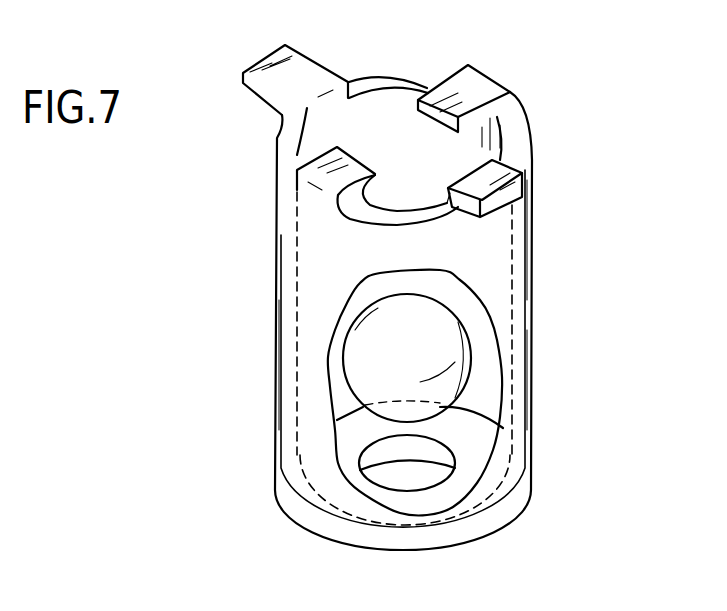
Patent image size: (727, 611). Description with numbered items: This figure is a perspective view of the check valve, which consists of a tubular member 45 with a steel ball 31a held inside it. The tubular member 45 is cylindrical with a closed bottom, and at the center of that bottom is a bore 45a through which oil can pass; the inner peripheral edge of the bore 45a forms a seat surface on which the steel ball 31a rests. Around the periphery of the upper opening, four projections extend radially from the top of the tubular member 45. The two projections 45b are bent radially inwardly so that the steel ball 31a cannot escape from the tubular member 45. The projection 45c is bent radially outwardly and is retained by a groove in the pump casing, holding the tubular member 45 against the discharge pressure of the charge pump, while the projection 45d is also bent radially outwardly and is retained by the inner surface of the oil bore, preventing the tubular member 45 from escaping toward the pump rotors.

The tubular member 45 is at (537, 343).
The bore 45a is at (450, 460).
The projections 45b is at (450, 80).
The projection 45c is at (282, 44).
The projection 45d is at (523, 202).
The steel ball 31a is at (363, 362).